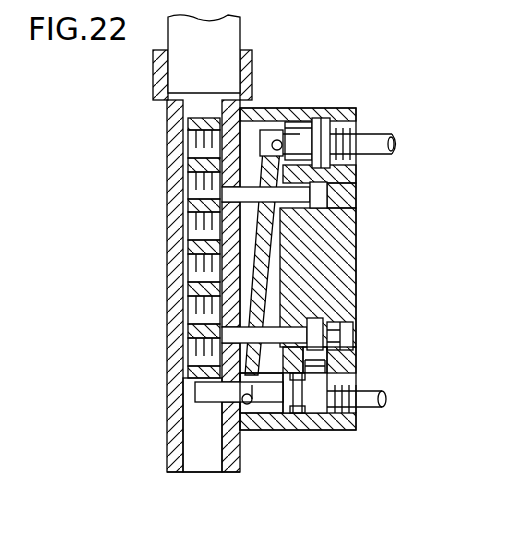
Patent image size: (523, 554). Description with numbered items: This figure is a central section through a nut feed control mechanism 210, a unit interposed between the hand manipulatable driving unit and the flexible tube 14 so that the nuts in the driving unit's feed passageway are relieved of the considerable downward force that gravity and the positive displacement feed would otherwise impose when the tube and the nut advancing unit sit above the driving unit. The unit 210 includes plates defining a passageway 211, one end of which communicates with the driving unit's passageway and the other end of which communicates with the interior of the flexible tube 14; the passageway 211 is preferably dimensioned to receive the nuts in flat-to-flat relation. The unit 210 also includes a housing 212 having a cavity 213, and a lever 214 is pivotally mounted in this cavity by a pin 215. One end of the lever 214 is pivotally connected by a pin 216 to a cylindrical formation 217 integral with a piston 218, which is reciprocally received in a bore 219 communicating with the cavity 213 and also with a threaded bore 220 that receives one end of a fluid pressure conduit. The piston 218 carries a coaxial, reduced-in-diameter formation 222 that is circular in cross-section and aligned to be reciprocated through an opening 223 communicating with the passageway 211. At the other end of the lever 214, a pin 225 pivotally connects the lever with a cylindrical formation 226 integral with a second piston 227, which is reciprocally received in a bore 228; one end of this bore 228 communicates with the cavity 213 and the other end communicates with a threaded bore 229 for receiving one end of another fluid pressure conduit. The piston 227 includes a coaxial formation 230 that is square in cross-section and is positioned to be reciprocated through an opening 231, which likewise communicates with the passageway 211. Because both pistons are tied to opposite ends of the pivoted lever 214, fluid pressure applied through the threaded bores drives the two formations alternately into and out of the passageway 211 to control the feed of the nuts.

The flexible tube 14 is at (238, 40).
The nut feed control mechanism 210 is at (253, 261).
The passageway 211 is at (187, 440).
The housing 212 is at (355, 290).
The cavity 213 is at (352, 305).
The lever 214 is at (355, 225).
The pin 215 is at (355, 265).
The pin 216 is at (265, 130).
The cylindrical formation 217 is at (295, 125).
The piston 218 is at (325, 112).
The bore 219 is at (352, 182).
The threaded bore 220 is at (358, 134).
The reduced-in-diameter formation 222 is at (215, 160).
The opening 223 is at (220, 145).
The pin 225 is at (244, 395).
The cylindrical formation 226 is at (270, 405).
The piston 227 is at (330, 412).
The bore 228 is at (352, 365).
The threaded bore 229 is at (385, 402).
The square in cross-section formation 230 is at (197, 396).
The opening 231 is at (225, 402).